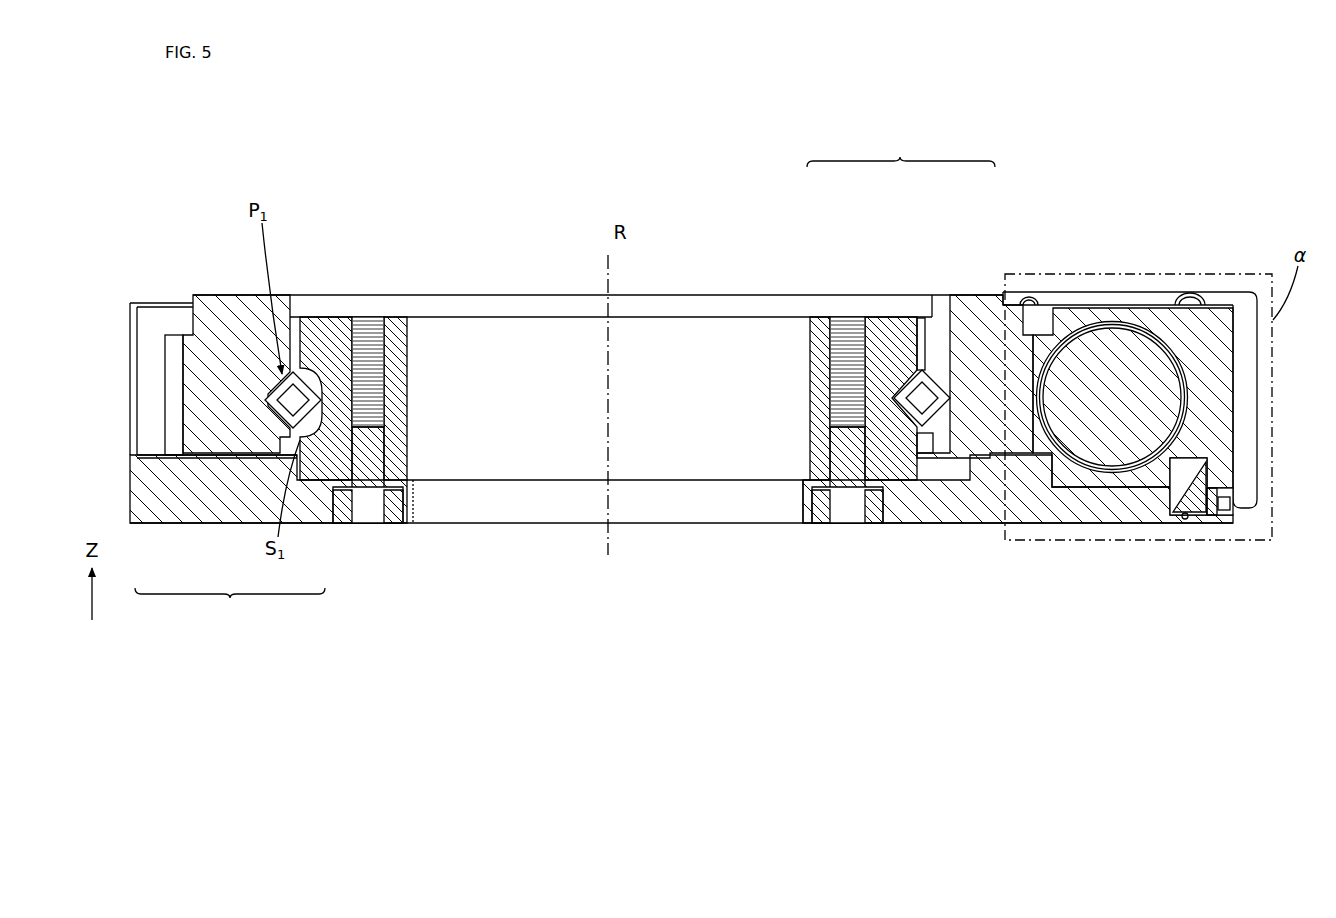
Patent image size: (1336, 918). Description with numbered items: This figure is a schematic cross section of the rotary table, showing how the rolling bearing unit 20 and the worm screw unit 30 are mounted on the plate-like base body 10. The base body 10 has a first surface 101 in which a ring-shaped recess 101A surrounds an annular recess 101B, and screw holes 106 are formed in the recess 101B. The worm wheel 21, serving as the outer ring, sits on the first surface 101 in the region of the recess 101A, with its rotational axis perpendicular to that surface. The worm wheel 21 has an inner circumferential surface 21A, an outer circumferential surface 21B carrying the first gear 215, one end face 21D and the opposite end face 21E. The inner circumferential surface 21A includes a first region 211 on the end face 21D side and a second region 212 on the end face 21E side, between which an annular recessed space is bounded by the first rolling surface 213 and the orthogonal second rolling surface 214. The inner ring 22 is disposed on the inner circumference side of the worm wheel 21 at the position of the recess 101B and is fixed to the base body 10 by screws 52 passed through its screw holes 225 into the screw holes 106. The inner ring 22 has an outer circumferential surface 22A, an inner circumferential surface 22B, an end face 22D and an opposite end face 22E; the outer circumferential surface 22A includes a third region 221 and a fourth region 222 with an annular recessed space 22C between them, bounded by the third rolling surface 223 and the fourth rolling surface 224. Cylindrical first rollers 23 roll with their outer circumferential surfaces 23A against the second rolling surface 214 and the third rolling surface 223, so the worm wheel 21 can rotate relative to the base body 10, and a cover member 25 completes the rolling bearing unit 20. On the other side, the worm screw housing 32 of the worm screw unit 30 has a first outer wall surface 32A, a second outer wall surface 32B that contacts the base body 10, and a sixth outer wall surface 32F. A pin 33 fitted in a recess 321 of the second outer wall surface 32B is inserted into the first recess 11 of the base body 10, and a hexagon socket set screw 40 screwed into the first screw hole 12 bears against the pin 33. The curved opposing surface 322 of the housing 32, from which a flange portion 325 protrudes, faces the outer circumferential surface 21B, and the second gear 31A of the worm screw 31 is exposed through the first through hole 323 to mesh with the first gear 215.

The base body 10 is at (128, 481).
The first recess 11 is at (1184, 472).
The first screw hole 12 is at (1232, 510).
The rolling bearing unit 20 is at (121, 324).
The worm wheel 21 is at (238, 320).
The inner circumferential surface 21A is at (230, 494).
The outer circumferential surface 21B is at (190, 300).
The end face 21D is at (268, 378).
The end face 21E is at (205, 462).
The inner ring 22 is at (326, 332).
The outer circumferential surface 22A is at (901, 280).
The inner circumferential surface 22B is at (408, 345).
The annular recessed space 22C is at (922, 345).
The end face 22D is at (868, 375).
The end face 22E is at (912, 458).
The first roller 23 is at (358, 450).
The outer circumferential surface 23A is at (354, 500).
The cover member 25 is at (131, 353).
The worm screw unit 30 is at (1262, 350).
The worm screw 31 is at (1110, 352).
The second gear 31A is at (1140, 332).
The worm screw housing 32 is at (1240, 305).
The first outer wall surface 32A is at (1182, 297).
The second outer wall surface 32B is at (1106, 495).
The sixth outer wall surface 32F is at (1236, 409).
The pin 33 is at (1203, 472).
The hexagon socket set screw 40 is at (1206, 520).
The screw 52 is at (391, 517).
The first surface 101 is at (148, 455).
The recess 101A is at (190, 452).
The recess 101B is at (410, 478).
The screw hole 106 is at (380, 515).
The first region 211 is at (298, 412).
The second region 212 is at (306, 398).
The first rolling surface 213 is at (272, 402).
The second rolling surface 214 is at (285, 415).
The first gear 215 is at (172, 390).
The third region 221 is at (920, 372).
The fourth region 222 is at (936, 418).
The third rolling surface 223 is at (910, 382).
The fourth rolling surface 224 is at (892, 398).
The screw hole 225 is at (372, 340).
The recess 321 is at (1180, 505).
The opposing surface 322 is at (1030, 480).
The first through hole 323 is at (1040, 470).
The flange portion 325 is at (1028, 322).